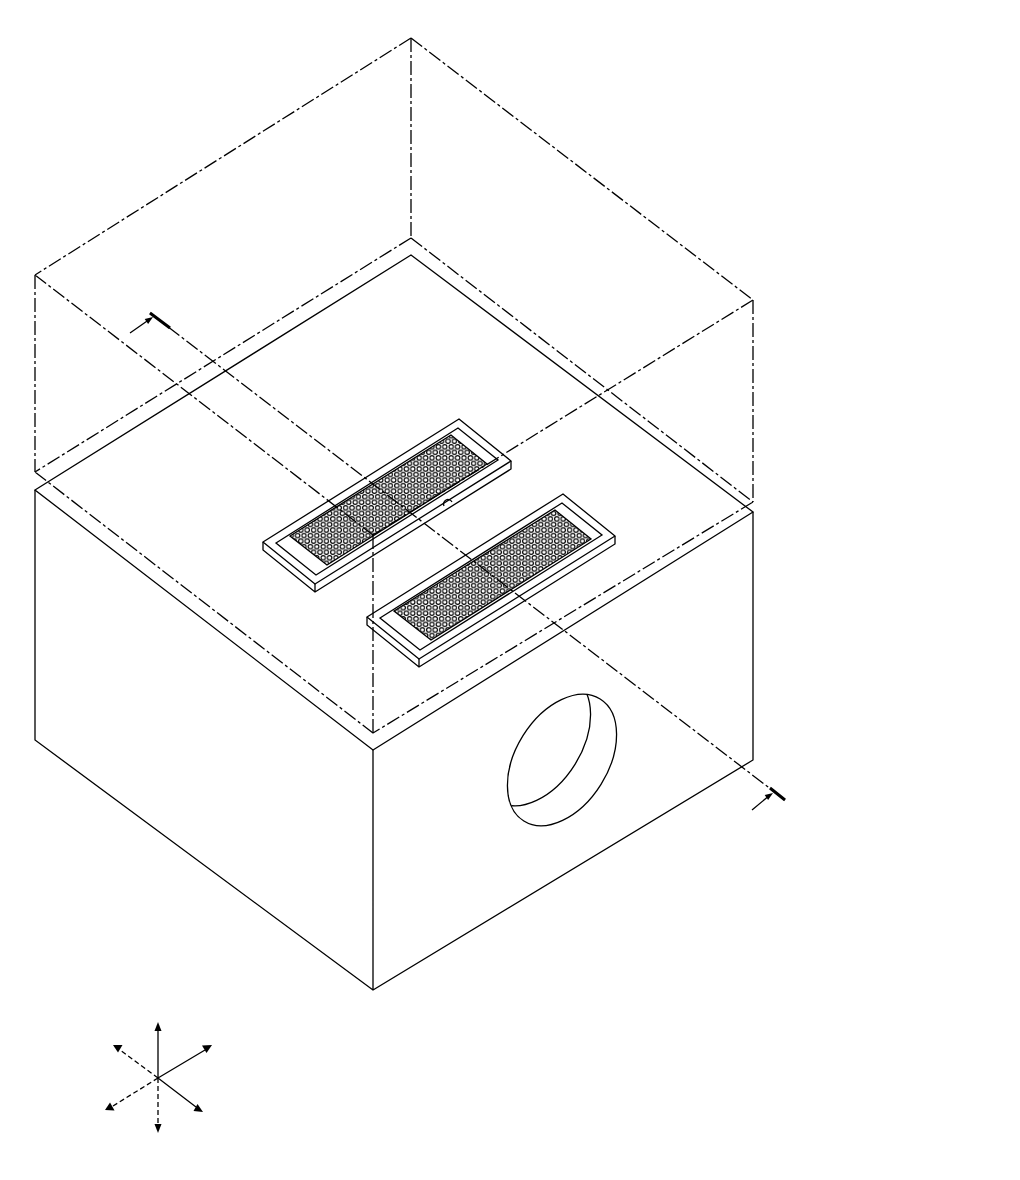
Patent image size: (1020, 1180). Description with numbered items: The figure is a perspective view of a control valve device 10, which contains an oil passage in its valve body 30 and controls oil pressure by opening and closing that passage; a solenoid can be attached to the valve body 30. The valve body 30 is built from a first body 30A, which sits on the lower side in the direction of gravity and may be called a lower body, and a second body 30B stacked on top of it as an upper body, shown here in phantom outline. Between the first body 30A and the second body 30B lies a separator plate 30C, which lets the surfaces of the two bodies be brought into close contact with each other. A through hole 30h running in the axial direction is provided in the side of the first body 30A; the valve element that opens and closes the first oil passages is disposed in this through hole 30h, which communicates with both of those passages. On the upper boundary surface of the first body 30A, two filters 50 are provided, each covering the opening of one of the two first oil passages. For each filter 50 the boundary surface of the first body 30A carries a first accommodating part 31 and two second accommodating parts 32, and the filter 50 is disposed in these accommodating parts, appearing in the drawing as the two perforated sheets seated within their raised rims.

The control valve device 10 is at (147, 92).
The valve body 30 is at (866, 405).
The first body 30A is at (755, 600).
The second body 30B is at (755, 418).
The separator plate 30C is at (755, 505).
The through hole 30h is at (553, 797).
The first accommodating part 31 is at (452, 502).
The second accommodating part 32 is at (495, 443).
The filter 50 is at (462, 447).